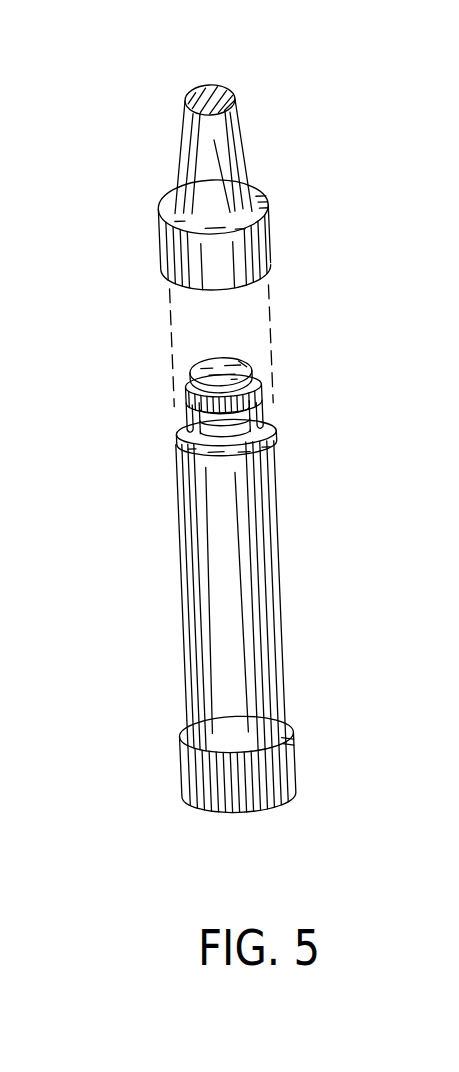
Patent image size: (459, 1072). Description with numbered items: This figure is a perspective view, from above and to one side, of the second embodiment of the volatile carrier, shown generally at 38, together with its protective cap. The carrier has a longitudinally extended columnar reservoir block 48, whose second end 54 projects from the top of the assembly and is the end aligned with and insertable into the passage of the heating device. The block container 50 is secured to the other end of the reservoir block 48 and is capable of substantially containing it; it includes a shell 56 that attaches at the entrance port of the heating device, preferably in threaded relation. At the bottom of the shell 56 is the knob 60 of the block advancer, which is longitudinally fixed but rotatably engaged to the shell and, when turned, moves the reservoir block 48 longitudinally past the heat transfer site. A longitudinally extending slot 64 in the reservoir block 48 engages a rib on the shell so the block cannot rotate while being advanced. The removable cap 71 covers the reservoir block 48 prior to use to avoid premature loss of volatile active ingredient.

The second embodiment of the volatile carrier 38 is at (308, 456).
The columnar reservoir block 48 is at (200, 403).
The block container 50 is at (198, 548).
The second end of the columnar reservoir block 54 is at (220, 360).
The shell 56 is at (270, 630).
The knob 60 is at (218, 787).
The longitudinally extending slot 64 is at (237, 367).
The removable cap 71 is at (240, 117).